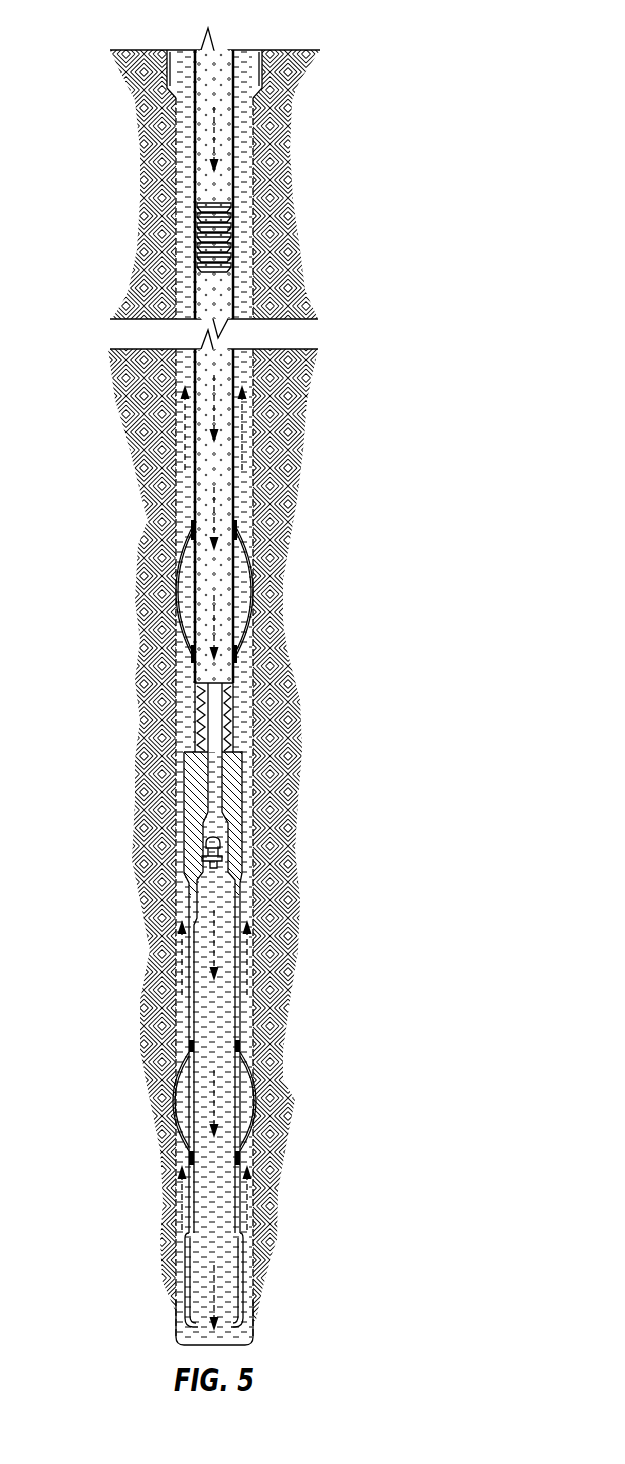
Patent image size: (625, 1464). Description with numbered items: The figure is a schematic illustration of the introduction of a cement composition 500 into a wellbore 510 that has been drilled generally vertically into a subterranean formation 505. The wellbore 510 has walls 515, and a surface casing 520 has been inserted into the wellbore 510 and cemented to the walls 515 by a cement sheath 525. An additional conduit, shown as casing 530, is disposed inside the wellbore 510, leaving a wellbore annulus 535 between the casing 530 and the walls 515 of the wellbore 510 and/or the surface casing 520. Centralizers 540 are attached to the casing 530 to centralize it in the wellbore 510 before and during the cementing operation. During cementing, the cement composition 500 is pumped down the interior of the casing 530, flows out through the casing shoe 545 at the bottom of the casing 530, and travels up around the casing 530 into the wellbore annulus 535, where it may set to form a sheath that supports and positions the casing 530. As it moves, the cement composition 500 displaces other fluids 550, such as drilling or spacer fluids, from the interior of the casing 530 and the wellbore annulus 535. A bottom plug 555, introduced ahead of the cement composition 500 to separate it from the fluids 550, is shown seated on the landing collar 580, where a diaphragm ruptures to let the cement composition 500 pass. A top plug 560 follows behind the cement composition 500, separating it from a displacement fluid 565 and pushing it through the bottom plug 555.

The cement composition 500 is at (215, 517).
The subterranean formation 505 is at (437, 794).
The wellbore 510 is at (262, 562).
The walls 515 is at (250, 213).
The surface casing 520 is at (242, 62).
The cement sheath 525 is at (172, 102).
The casing 530 is at (233, 473).
The wellbore annulus 535 is at (193, 493).
The centralizers 540 is at (172, 1102).
The casing shoe 545 is at (185, 1288).
The fluids 550 is at (213, 945).
The bottom plug 555 is at (197, 697).
The top plug 560 is at (202, 233).
The displacement fluid 565 is at (215, 145).
The landing collar 580 is at (195, 788).